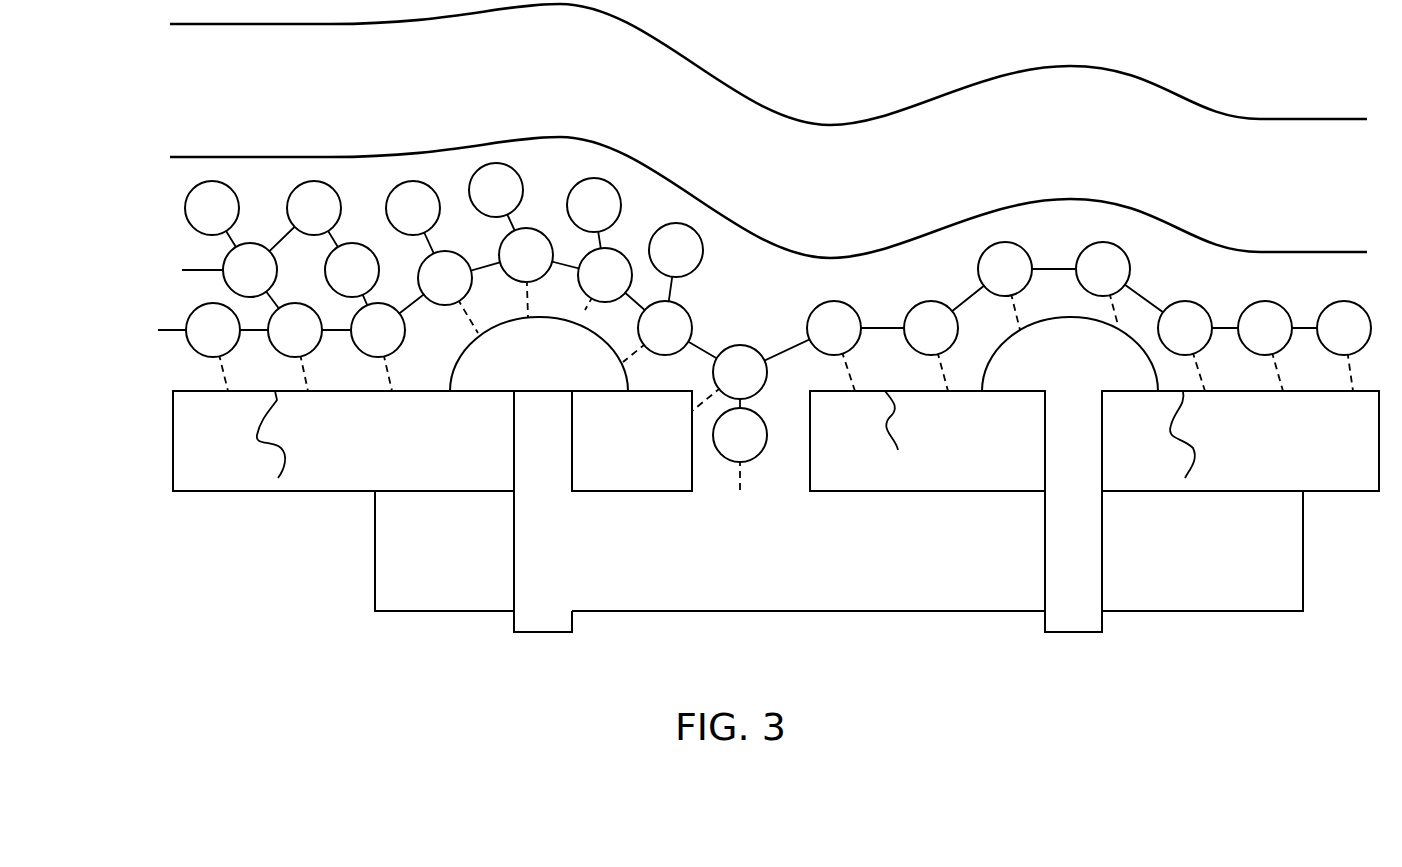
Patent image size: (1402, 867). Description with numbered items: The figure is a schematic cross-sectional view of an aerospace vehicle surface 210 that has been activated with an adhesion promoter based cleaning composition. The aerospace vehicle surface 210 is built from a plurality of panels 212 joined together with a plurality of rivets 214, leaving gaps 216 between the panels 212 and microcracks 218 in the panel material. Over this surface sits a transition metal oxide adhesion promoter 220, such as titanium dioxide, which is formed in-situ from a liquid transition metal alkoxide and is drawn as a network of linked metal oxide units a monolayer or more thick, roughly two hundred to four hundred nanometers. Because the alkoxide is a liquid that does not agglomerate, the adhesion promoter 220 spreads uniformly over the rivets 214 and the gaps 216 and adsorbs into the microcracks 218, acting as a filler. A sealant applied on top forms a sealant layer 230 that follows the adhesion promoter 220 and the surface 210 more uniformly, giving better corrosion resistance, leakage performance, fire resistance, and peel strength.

The aerospace vehicle surface 210 is at (930, 635).
The panels 212 is at (428, 450).
The rivets 214 is at (560, 369).
The gaps 216 is at (805, 417).
The microcracks 218 is at (280, 449).
The transition metal oxide adhesion promoter 220 is at (146, 165).
The sealant layer 230 is at (146, 27).